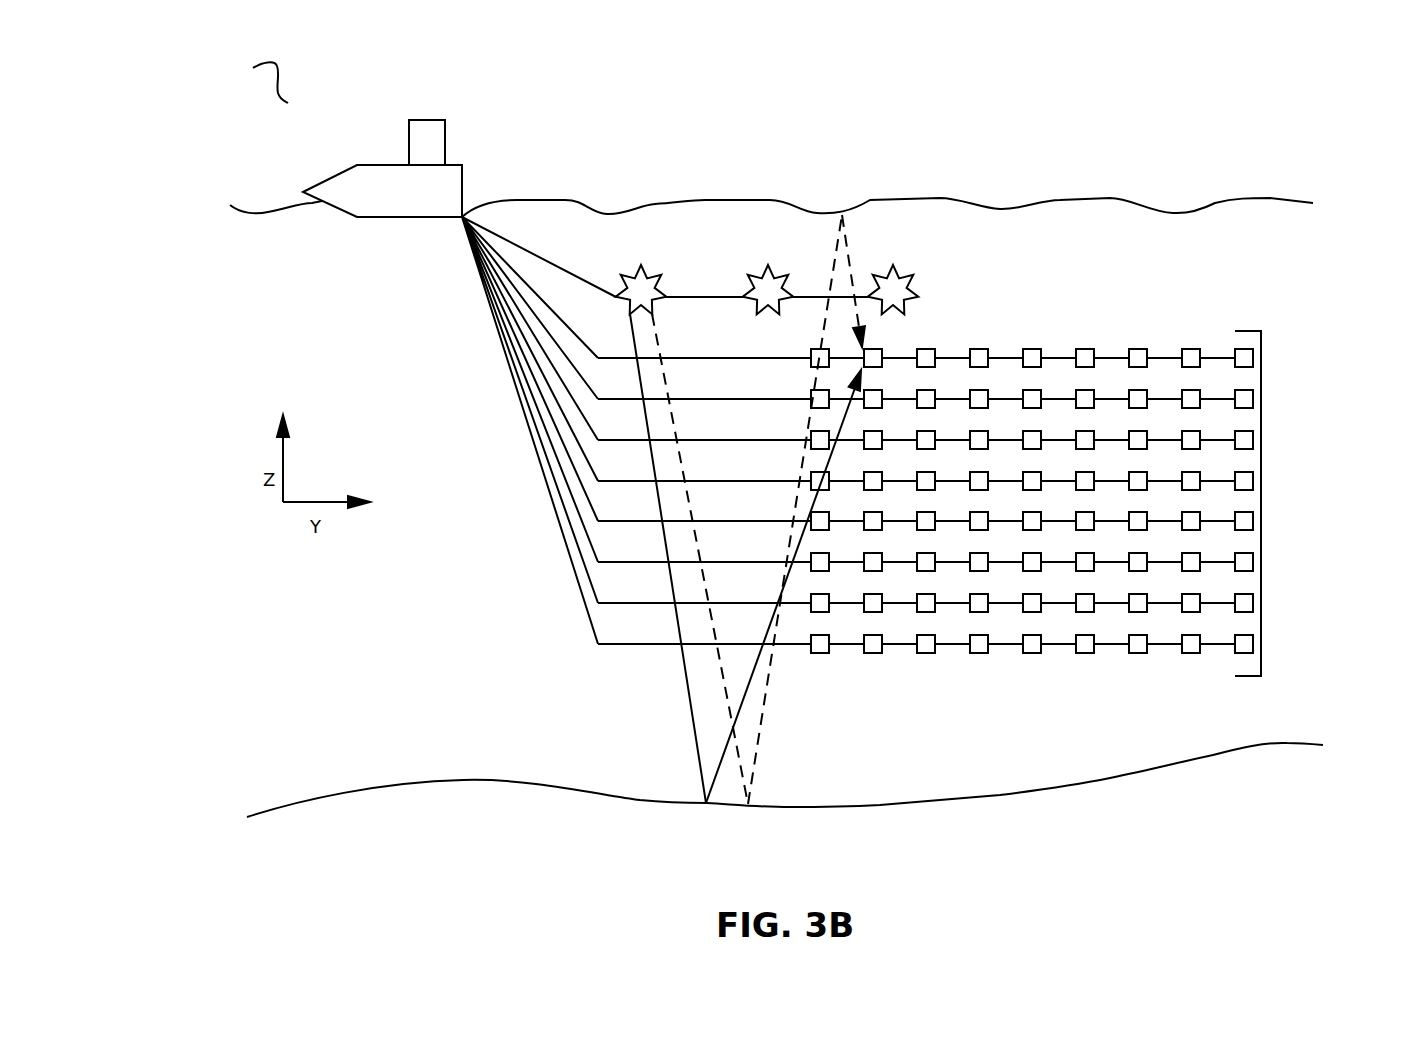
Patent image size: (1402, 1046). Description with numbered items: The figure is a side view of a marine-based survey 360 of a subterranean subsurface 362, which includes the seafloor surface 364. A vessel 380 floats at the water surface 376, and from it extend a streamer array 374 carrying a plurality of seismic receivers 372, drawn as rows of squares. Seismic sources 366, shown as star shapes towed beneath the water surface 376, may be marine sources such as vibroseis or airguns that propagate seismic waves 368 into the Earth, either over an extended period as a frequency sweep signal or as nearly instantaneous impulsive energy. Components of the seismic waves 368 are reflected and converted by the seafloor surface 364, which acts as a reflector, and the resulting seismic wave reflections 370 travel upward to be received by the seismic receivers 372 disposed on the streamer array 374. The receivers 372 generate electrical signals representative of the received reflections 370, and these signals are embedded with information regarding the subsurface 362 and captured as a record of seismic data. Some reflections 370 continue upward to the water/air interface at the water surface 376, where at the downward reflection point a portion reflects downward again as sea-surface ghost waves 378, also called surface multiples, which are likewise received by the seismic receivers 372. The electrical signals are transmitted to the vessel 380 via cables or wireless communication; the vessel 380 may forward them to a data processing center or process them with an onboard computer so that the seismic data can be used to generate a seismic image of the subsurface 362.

The marine-based survey 360 is at (247, 81).
The subterranean subsurface 362 is at (402, 840).
The seafloor surface 364 is at (1110, 778).
The seismic sources 366 is at (667, 296).
The seismic waves 368 is at (667, 385).
The seismic wave reflections 370 is at (800, 470).
The seismic receivers 372 is at (1192, 348).
The streamer array 374 is at (1261, 502).
The water surface 376 is at (1066, 200).
The sea-surface ghost waves 378 is at (846, 248).
The vessel 380 is at (425, 119).